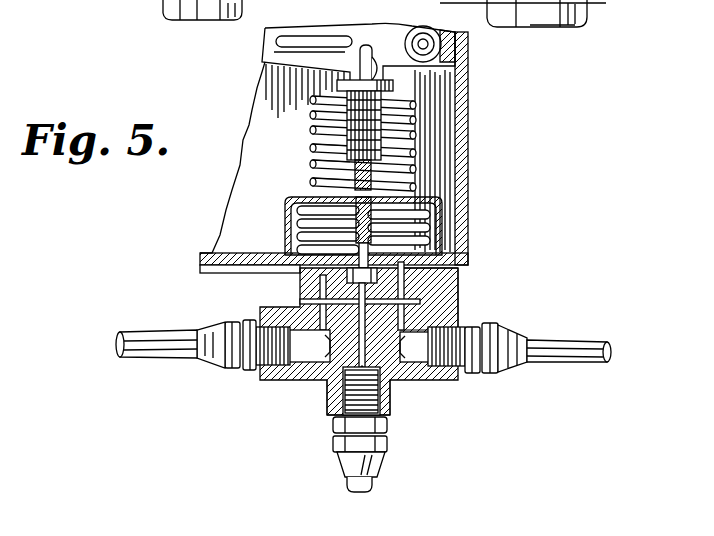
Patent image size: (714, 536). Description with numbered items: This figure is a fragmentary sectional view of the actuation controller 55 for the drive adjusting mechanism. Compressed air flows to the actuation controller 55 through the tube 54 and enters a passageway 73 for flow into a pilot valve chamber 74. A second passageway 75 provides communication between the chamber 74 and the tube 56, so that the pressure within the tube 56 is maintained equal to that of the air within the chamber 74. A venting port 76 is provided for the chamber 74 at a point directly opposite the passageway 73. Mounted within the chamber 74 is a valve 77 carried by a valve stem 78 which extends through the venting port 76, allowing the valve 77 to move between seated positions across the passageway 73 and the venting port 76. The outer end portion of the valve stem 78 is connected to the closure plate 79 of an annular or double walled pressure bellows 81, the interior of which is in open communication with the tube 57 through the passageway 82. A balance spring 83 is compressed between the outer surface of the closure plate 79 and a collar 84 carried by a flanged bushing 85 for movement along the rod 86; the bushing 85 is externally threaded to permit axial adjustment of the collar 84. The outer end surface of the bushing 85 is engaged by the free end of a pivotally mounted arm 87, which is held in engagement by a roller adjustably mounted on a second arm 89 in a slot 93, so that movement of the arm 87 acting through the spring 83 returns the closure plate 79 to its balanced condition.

The tube 54 is at (347, 488).
The actuation controller 55 is at (423, 383).
The tube 56 is at (177, 313).
The tube 57 is at (553, 345).
The passageway 73 is at (338, 381).
The pilot valve chamber 74 is at (376, 281).
The second passageway 75 is at (330, 288).
The venting port 76 is at (335, 270).
The valve 77 is at (378, 271).
The valve stem 78 is at (347, 243).
The closure plate 79 is at (342, 192).
The annular or double walled pressure bellows 81 is at (430, 230).
The passageway 82 is at (420, 313).
The balance spring 83 is at (417, 166).
The collar 84 is at (422, 100).
The flanged bushing 85 is at (347, 147).
The rod 86 is at (347, 163).
The pivotally mounted arm 87 is at (266, 69).
The second arm 89 is at (384, 40).
The slot 93 is at (322, 40).